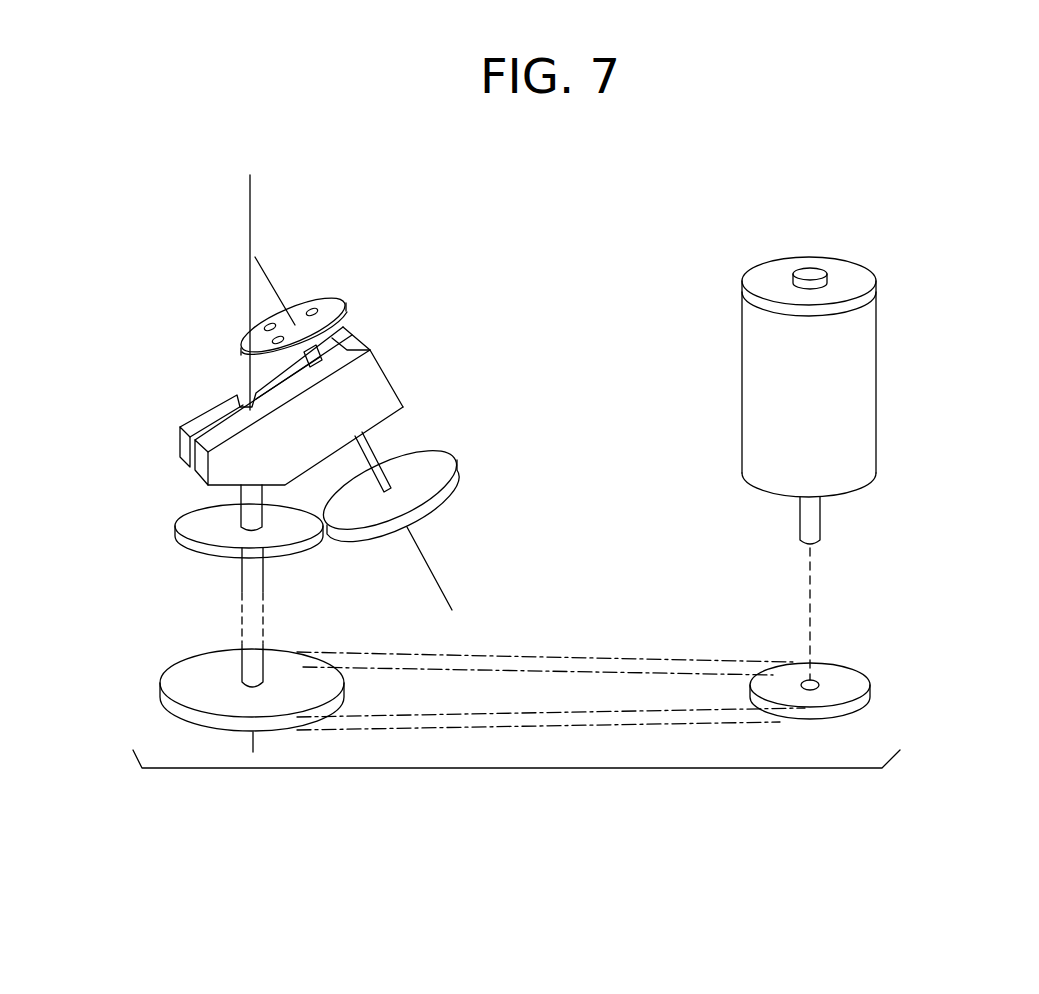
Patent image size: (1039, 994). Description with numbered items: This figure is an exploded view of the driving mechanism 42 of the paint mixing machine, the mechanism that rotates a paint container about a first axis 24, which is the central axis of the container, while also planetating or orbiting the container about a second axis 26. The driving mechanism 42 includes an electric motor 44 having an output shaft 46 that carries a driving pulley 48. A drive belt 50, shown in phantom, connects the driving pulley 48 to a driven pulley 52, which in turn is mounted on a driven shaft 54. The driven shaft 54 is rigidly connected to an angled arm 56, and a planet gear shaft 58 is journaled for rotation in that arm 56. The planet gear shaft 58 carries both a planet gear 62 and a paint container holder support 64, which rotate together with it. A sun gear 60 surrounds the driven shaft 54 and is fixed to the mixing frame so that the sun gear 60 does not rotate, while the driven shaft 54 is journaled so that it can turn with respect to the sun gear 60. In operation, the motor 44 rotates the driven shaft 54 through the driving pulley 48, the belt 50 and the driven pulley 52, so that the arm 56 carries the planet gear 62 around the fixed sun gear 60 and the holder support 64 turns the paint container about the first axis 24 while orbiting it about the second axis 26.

The first axis 24 is at (443, 580).
The second axis 26 is at (249, 209).
The driving mechanism 42 is at (620, 320).
The electric motor 44 is at (887, 348).
The output shaft 46 is at (820, 527).
The driving pulley 48 is at (866, 672).
The drive belt 50 is at (572, 657).
The driven pulley 52 is at (315, 657).
The driven shaft 54 is at (239, 497).
The angled arm 56 is at (182, 443).
The planet gear shaft 58 is at (375, 450).
The sun gear 60 is at (188, 558).
The planet gear 62 is at (452, 490).
The paint container holder support 64 is at (328, 293).